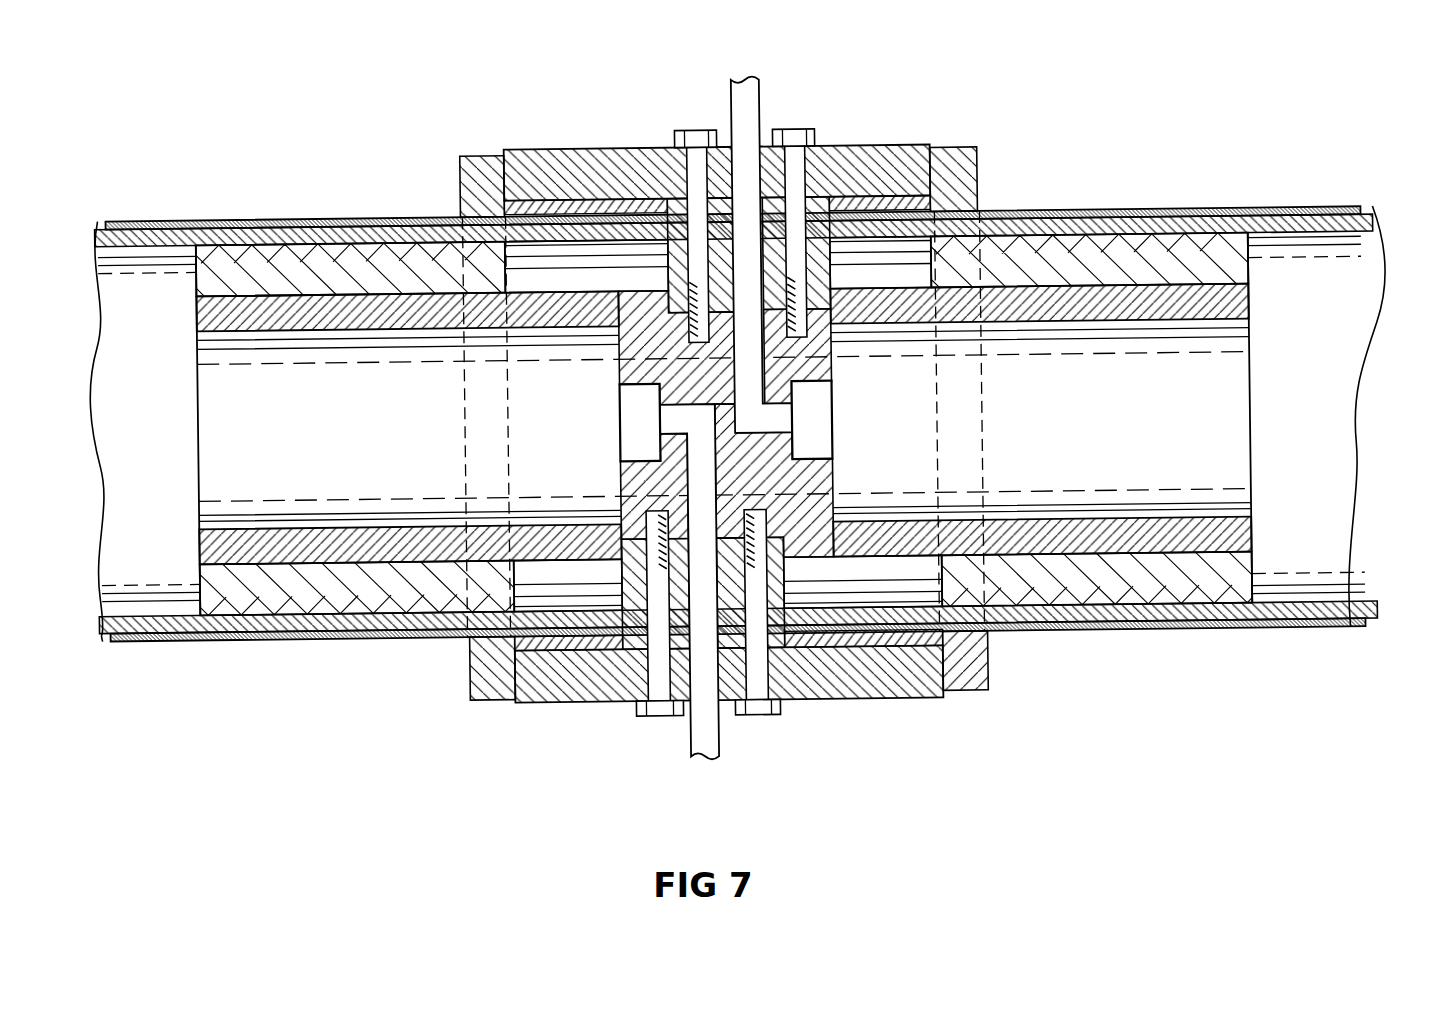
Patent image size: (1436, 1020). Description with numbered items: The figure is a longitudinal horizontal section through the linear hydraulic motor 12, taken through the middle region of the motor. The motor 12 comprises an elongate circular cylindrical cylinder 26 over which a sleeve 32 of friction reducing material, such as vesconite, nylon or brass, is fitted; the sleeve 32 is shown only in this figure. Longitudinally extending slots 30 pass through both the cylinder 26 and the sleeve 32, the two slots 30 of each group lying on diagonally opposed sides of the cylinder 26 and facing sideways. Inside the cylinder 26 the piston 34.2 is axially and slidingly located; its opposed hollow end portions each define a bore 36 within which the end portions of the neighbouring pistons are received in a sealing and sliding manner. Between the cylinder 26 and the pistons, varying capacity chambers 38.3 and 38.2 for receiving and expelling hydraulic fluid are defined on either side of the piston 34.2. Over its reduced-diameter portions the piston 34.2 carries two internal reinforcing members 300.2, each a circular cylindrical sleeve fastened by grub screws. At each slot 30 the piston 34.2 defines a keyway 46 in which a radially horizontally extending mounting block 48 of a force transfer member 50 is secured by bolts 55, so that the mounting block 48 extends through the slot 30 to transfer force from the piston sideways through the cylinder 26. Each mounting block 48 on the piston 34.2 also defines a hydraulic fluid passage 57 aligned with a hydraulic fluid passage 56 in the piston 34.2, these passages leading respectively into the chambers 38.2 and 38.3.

The linear hydraulic motor 12 is at (218, 196).
The cylinder 26 is at (1337, 612).
The slot 30 is at (1010, 227).
The sleeve 32 is at (1197, 210).
The piston 34.2 is at (1027, 533).
The bore 36 is at (285, 333).
The varying capacity chamber 38.2 is at (1053, 433).
The varying capacity chamber 38.3 is at (343, 450).
The keyway 46 is at (788, 538).
The mounting block 48 is at (823, 263).
The force transfer member 50 is at (578, 142).
The bolt 55 is at (697, 138).
The hydraulic fluid passage 56 is at (747, 352).
The hydraulic fluid passage 57 is at (758, 92).
The internal reinforcing member 300.2 is at (392, 262).